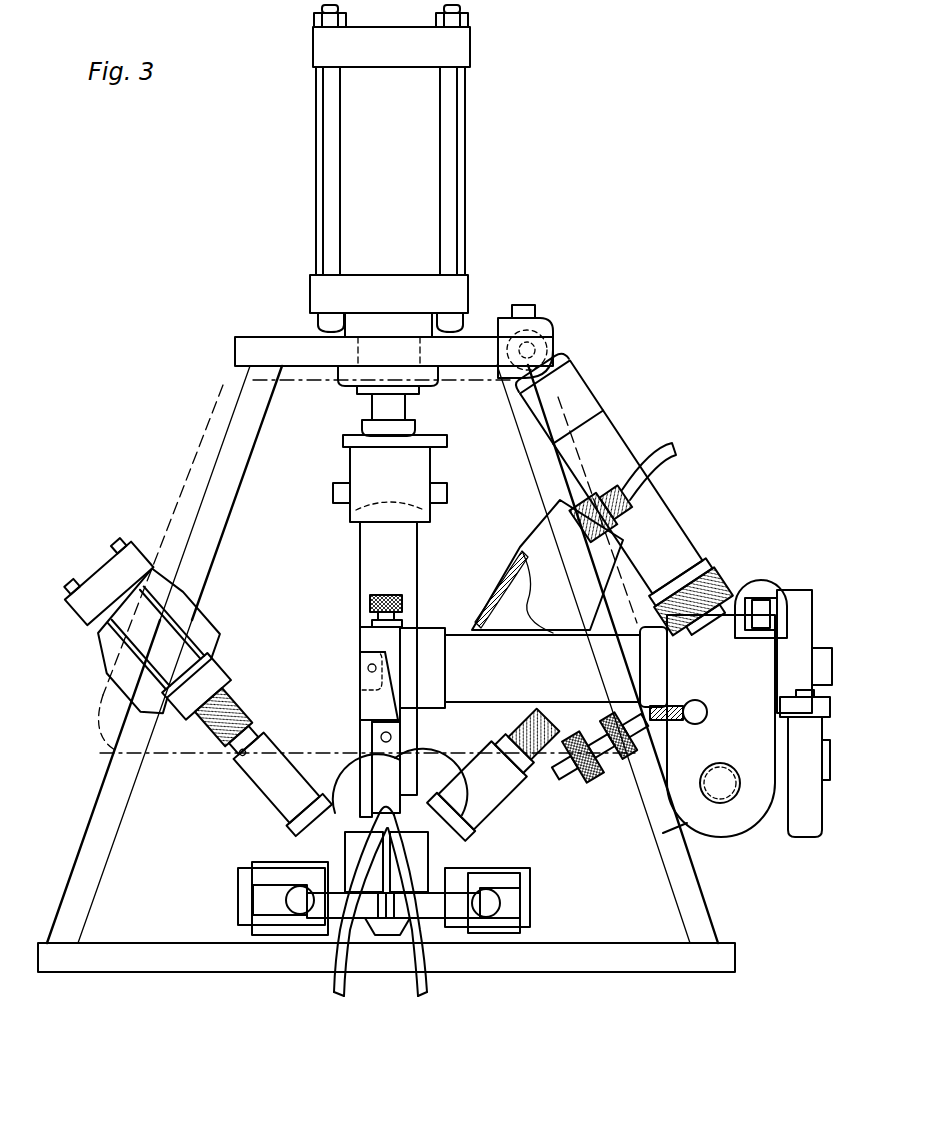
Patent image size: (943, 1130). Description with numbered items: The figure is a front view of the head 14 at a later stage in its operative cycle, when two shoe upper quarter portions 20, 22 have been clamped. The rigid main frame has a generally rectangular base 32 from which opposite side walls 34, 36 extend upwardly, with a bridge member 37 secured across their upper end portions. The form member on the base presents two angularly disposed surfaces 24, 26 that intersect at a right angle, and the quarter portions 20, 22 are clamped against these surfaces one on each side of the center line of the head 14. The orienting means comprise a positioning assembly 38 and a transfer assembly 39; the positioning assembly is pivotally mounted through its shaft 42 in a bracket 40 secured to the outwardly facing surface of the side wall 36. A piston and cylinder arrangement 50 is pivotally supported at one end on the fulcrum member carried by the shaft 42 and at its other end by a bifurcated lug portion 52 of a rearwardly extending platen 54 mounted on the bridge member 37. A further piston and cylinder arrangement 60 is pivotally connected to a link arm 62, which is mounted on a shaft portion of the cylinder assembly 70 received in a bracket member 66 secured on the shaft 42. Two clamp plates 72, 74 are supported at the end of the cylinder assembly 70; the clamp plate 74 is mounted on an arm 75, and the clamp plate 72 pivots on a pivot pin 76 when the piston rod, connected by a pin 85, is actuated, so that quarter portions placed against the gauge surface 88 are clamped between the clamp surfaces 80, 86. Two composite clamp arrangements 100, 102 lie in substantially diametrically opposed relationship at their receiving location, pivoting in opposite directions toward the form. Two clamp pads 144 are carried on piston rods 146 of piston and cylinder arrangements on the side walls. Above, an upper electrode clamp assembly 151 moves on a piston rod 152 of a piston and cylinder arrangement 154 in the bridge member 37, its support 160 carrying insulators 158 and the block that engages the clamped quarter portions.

The head 14 is at (494, 220).
The shoe upper quarter portion 20 is at (335, 990).
The shoe upper quarter portion 22 is at (421, 990).
The angularly disposed surface 24 is at (330, 858).
The angularly disposed surface 26 is at (465, 862).
The base 32 is at (622, 968).
The side wall 34 is at (235, 425).
The side wall 36 is at (532, 455).
The bridge member 37 is at (240, 350).
The positioning assembly 38 is at (228, 903).
The transfer assembly 39 is at (644, 432).
The bracket 40 is at (690, 846).
The shaft 42 is at (735, 800).
The piston and cylinder arrangement 50 is at (660, 500).
The bifurcated lug portion 52 is at (553, 348).
The platen 54 is at (548, 320).
The piston and cylinder arrangement 60 is at (757, 588).
The link arm 62 is at (806, 590).
The bracket member 66 is at (763, 695).
The cylinder assembly 70 is at (500, 702).
The clamp plate 72 is at (365, 702).
The clamp plate 74 is at (345, 770).
The arm 75 is at (410, 680).
The pivot pin 76 is at (392, 737).
The clamp surface 80 is at (340, 838).
The pin 85 is at (367, 668).
The clamp surface 86 is at (455, 843).
The gauge surface 88 is at (432, 822).
The composite clamp arrangement 100 is at (231, 885).
The composite clamp arrangement 102 is at (557, 884).
The clamp pad 144 is at (295, 770).
The piston rod 146 is at (238, 750).
The upper electrode clamp assembly 151 is at (352, 562).
The piston rod 152 is at (405, 416).
The piston and cylinder arrangement 154 is at (428, 153).
The insulator 158 is at (410, 574).
The support 160 is at (448, 495).